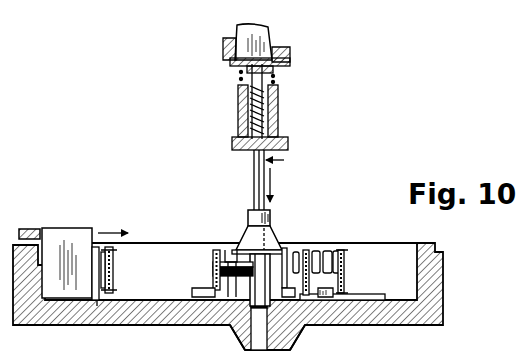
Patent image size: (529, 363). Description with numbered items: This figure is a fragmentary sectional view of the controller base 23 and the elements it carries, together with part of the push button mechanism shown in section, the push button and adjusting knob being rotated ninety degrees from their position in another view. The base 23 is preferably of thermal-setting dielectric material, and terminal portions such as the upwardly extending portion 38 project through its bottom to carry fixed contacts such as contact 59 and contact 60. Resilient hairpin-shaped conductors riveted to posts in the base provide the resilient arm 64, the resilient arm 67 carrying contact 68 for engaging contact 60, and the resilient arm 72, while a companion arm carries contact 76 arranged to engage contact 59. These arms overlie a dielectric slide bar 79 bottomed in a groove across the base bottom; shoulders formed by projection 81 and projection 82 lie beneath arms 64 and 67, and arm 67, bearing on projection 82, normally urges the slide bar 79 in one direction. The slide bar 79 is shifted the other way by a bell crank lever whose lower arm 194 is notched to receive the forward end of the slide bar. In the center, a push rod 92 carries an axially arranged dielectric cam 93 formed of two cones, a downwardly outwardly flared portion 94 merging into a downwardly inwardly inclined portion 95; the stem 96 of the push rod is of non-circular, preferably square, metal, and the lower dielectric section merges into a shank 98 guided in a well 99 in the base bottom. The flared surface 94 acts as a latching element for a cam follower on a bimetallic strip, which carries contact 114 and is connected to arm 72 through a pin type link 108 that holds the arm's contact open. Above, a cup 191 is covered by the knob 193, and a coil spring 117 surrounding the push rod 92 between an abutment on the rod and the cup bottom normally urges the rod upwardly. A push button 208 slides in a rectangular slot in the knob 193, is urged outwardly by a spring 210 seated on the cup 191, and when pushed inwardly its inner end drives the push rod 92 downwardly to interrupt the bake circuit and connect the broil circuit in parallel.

The base 23 is at (443, 265).
The upwardly extending portion of terminal 38 is at (96, 268).
The contact 59 is at (114, 262).
The contact 60 is at (345, 250).
The resilient arm 64 is at (345, 265).
The resilient arm 67 is at (308, 250).
The contact 68 is at (333, 250).
The resilient arm 72 is at (212, 271).
The contact 76 is at (110, 278).
The slide bar 79 is at (70, 232).
The projection 81 is at (334, 292).
The projection 82 is at (300, 301).
The push rod 92 is at (285, 177).
The cam 93 is at (268, 224).
The downwardly outwardly flared portion 94 is at (252, 229).
The downwardly inwardly inclined portion 95 is at (245, 246).
The stem 96 is at (254, 170).
The shank 98 is at (288, 297).
The well 99 is at (251, 334).
The pin type link 108 is at (212, 256).
The contact 114 is at (286, 252).
The spring 117 is at (279, 100).
The cup 191 is at (279, 120).
The knob 193 is at (289, 54).
The lower arm 194 is at (28, 229).
The push button 208 is at (266, 32).
The spring 210 is at (276, 76).